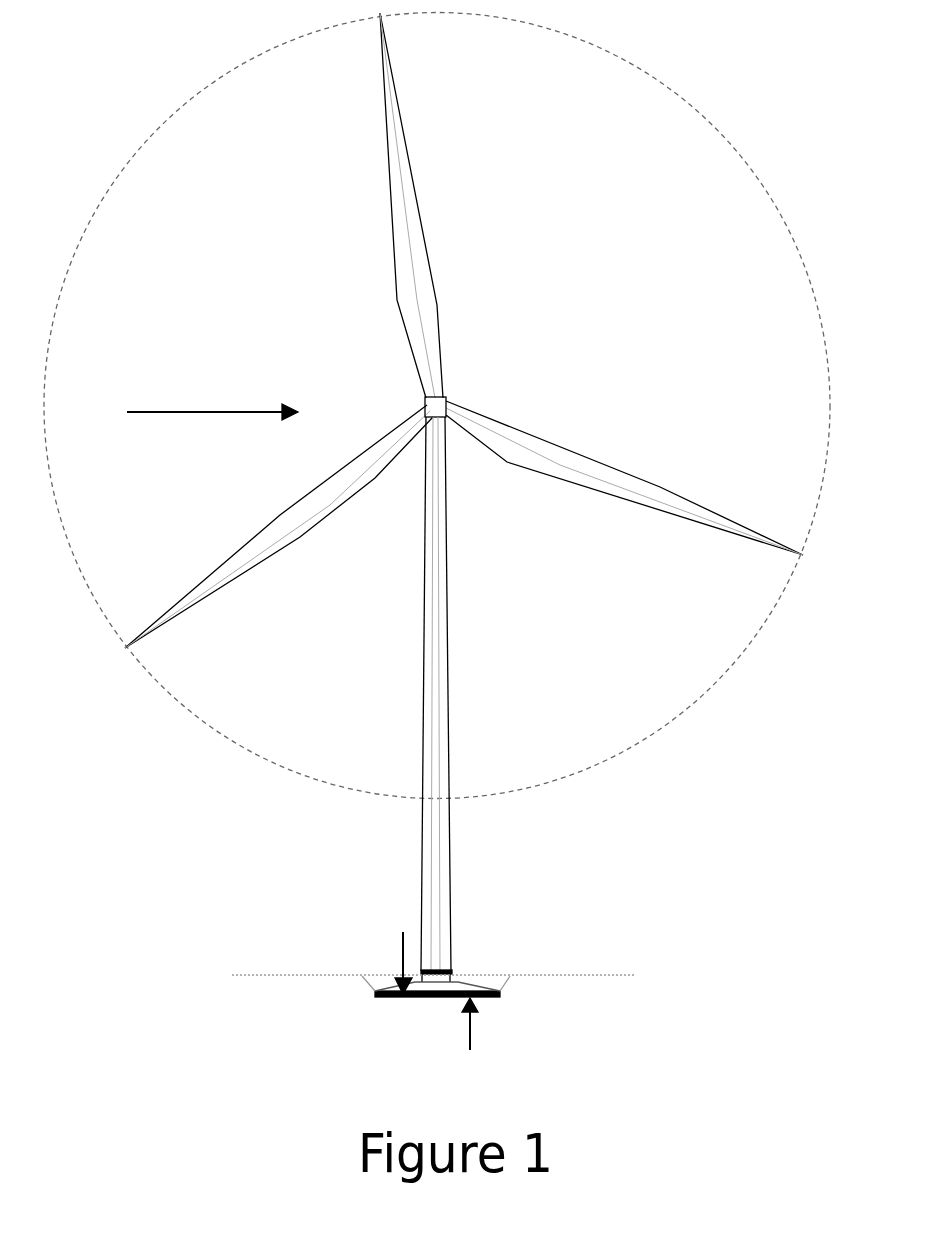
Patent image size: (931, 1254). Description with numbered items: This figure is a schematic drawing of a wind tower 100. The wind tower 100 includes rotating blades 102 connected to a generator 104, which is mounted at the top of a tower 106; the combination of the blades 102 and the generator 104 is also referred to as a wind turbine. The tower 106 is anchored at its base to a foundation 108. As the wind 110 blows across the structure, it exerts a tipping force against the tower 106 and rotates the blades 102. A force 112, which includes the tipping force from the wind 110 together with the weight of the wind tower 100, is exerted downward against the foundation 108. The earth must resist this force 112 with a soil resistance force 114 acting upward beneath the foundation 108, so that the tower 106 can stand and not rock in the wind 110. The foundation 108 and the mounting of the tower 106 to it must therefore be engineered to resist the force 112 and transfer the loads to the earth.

The wind tower 100 is at (121, 796).
The rotating blades 102 is at (405, 133).
The generator 104 is at (443, 398).
The tower 106 is at (447, 832).
The foundation 108 is at (477, 984).
The wind 110 is at (191, 414).
The force 112 is at (399, 947).
The soil resistance force 114 is at (472, 1039).